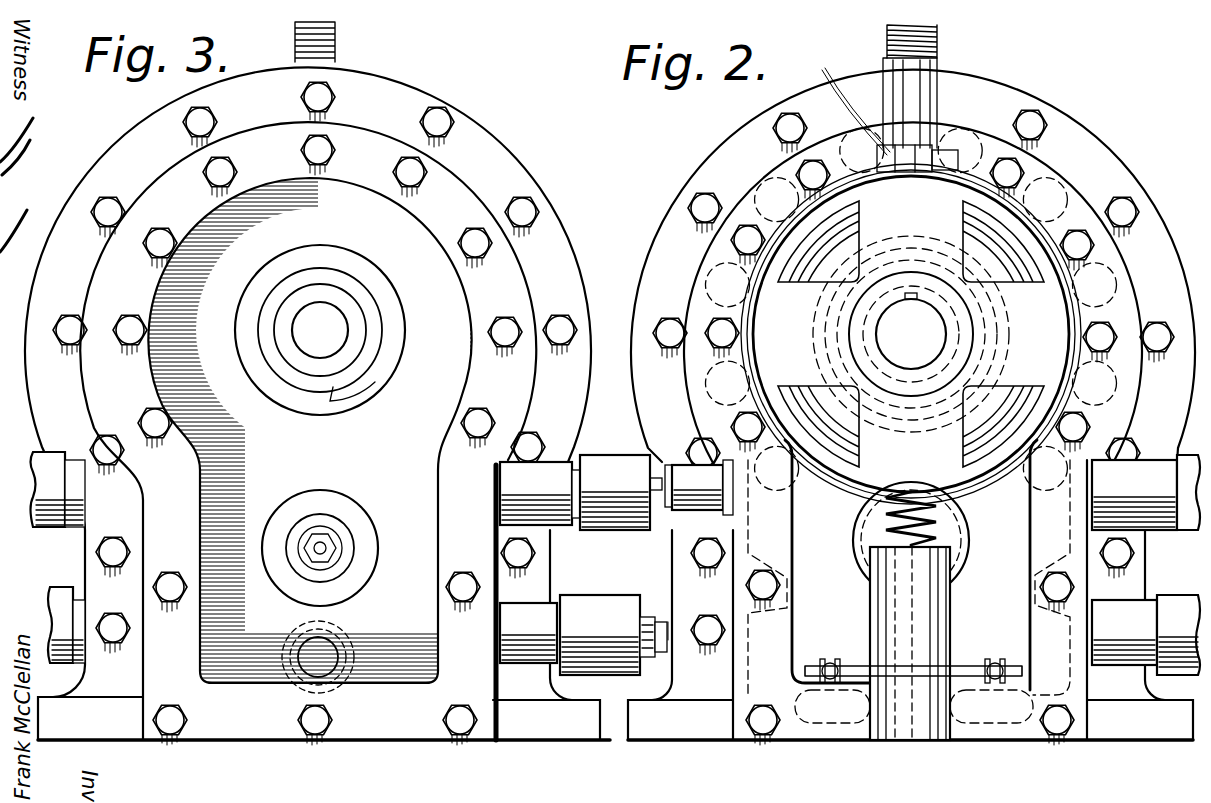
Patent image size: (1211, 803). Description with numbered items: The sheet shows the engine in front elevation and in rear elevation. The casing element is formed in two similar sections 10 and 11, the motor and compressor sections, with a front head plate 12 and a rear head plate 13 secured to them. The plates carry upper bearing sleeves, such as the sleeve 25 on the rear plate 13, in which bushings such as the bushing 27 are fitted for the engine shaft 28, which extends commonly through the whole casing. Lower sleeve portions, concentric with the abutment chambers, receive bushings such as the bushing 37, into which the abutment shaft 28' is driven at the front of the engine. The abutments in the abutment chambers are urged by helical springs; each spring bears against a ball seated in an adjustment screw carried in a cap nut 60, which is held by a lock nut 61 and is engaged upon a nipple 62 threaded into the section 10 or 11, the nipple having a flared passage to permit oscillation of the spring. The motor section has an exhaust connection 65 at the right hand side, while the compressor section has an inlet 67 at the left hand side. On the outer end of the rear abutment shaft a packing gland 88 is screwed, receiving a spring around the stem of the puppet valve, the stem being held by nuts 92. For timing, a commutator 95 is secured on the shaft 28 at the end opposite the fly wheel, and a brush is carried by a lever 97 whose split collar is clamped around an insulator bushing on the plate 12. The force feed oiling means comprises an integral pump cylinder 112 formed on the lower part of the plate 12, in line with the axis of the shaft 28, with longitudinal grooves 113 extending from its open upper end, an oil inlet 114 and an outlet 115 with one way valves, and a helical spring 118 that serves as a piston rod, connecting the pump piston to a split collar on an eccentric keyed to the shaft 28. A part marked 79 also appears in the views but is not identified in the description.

In FIG. 2, the casing section 10 is at (1113, 173).
In FIG. 3, the casing section 11 is at (517, 167).
In FIG. 2, the front head plate 12 is at (1070, 122).
In FIG. 3, the rear head plate 13 is at (65, 268).
In FIG. 3, the upper bearing sleeve 25 is at (248, 366).
In FIG. 3, the bushing 27 is at (333, 387).
In FIG. 3, the engine shaft 28 is at (340, 330).
In FIG. 2, the engine shaft 28 is at (926, 334).
In FIG. 2, the abutment shaft 28' is at (849, 523).
In FIG. 3, the bushing 37 is at (290, 502).
In FIG. 2, the bushing 37 is at (962, 553).
In FIG. 2, the cap nut 60 is at (1178, 665).
In FIG. 3, the lock nut 61 is at (650, 625).
In FIG. 3, the nipple 62 is at (545, 617).
In FIG. 3, the exhaust connection 65 is at (70, 460).
In FIG. 2, the exhaust connection 65 is at (1157, 467).
In FIG. 3, the inlet 67 is at (568, 462).
In FIG. 2, the pin 79 is at (708, 502).
In FIG. 3, the packing gland 88 is at (347, 535).
In FIG. 3, the nuts 92 is at (330, 563).
In FIG. 2, the commutator 95 is at (1025, 395).
In FIG. 2, the lever 97 is at (920, 88).
In FIG. 2, the pump cylinder 112 is at (873, 600).
In FIG. 2, the longitudinal grooves 113 is at (858, 562).
In FIG. 2, the oil inlet 114 is at (840, 652).
In FIG. 2, the oil outlet 115 is at (995, 663).
In FIG. 2, the helical spring 118 is at (943, 525).